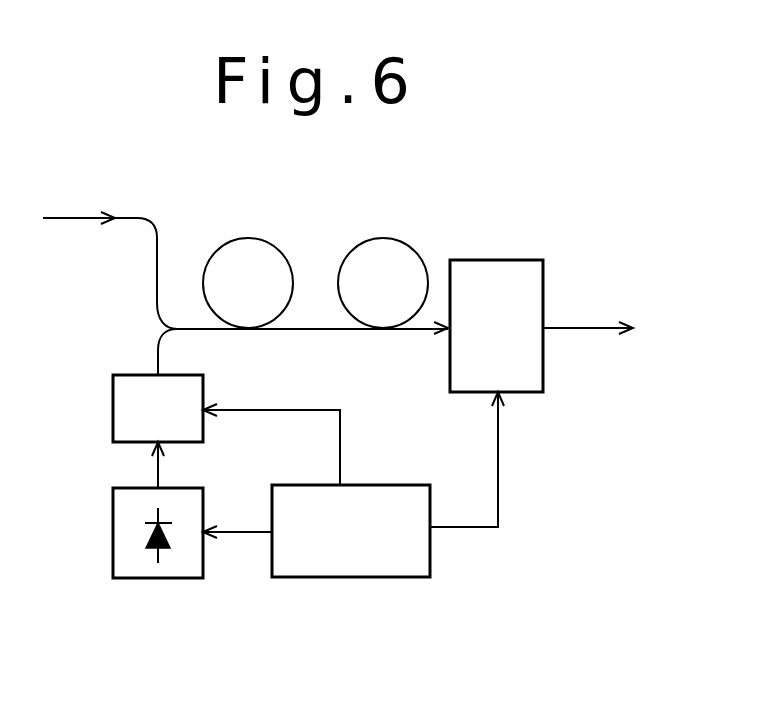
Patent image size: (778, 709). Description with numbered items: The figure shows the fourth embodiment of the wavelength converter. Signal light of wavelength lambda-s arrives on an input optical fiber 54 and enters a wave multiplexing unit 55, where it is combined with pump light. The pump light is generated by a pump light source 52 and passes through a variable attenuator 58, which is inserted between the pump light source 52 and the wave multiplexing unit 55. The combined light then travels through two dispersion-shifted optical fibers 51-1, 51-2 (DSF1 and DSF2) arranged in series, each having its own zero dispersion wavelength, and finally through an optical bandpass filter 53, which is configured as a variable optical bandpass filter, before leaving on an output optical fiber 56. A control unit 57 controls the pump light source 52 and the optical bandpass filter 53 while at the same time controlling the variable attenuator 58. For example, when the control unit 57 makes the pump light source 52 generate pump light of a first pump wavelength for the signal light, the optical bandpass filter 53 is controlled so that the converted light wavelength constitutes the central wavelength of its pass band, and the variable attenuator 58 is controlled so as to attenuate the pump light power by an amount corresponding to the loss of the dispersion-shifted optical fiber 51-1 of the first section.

The dispersion-shifted optical fiber 51-1 is at (283, 310).
The dispersion-shifted optical fiber 51-2 is at (420, 310).
The pump light source 52 is at (173, 578).
The optical bandpass filter 53 is at (518, 260).
The input optical fiber 54 is at (65, 218).
The wave multiplexing unit 55 is at (157, 331).
The output optical fiber 56 is at (567, 328).
The control unit 57 is at (370, 577).
The variable attenuator 58 is at (113, 403).